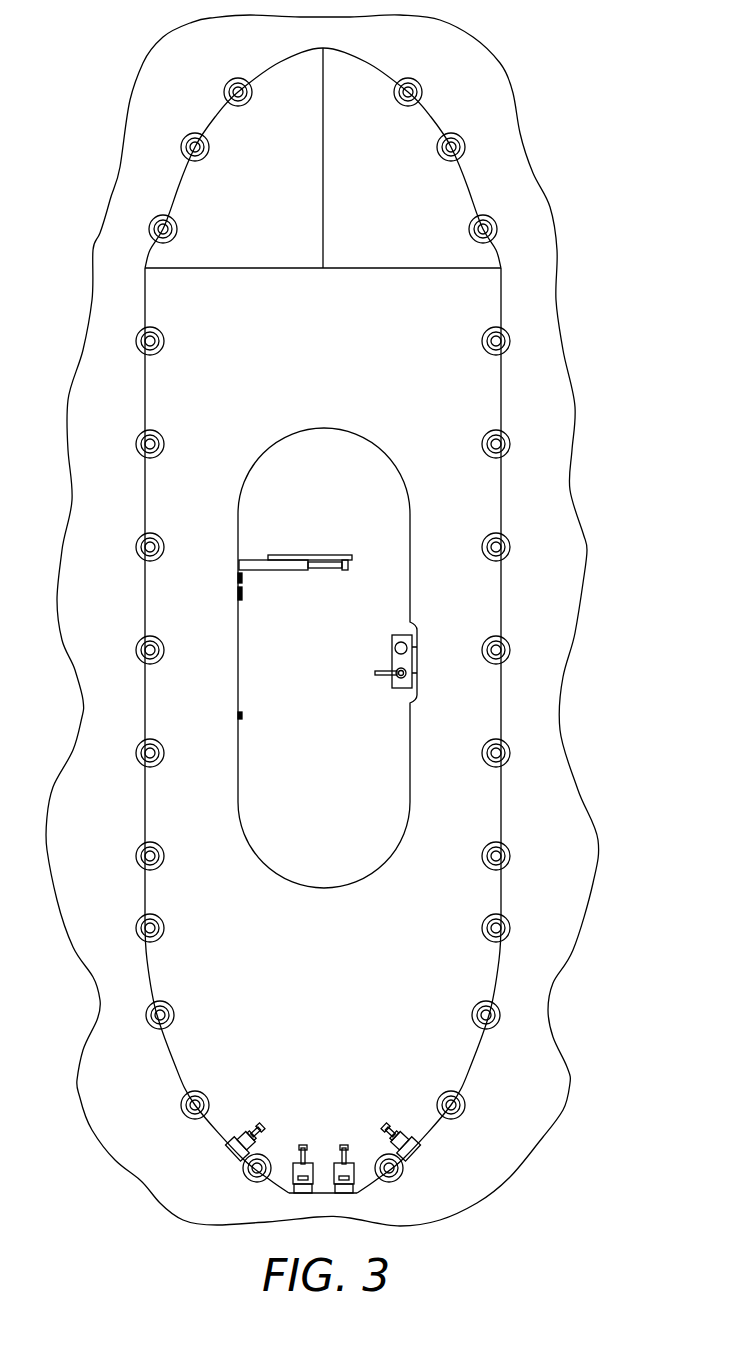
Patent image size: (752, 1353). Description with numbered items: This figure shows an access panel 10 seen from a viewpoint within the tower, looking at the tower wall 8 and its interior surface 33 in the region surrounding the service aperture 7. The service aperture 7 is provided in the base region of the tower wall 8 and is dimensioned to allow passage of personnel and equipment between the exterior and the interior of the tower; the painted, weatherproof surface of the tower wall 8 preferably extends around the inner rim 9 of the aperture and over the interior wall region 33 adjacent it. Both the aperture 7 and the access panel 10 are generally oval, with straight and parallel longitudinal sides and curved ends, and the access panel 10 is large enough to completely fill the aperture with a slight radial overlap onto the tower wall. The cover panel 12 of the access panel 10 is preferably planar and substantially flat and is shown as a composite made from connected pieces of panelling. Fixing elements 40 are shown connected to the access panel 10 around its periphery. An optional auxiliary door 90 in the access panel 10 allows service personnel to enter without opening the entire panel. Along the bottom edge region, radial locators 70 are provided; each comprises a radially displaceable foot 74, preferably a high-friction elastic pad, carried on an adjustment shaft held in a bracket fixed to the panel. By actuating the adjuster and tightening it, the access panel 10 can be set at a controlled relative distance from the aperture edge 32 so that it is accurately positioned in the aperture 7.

The tower wall 8 is at (170, 58).
The inner rim of the aperture 9 is at (167, 177).
The aperture edge 32 is at (160, 283).
The fixing elements 40 is at (127, 343).
The access panel 10 is at (483, 300).
The cover panel 12 is at (176, 710).
The service aperture 7 is at (505, 483).
The interior wall region 33 is at (554, 615).
The auxiliary door 90 is at (267, 630).
The locators 70 is at (410, 1116).
The foot 74 is at (225, 1147).